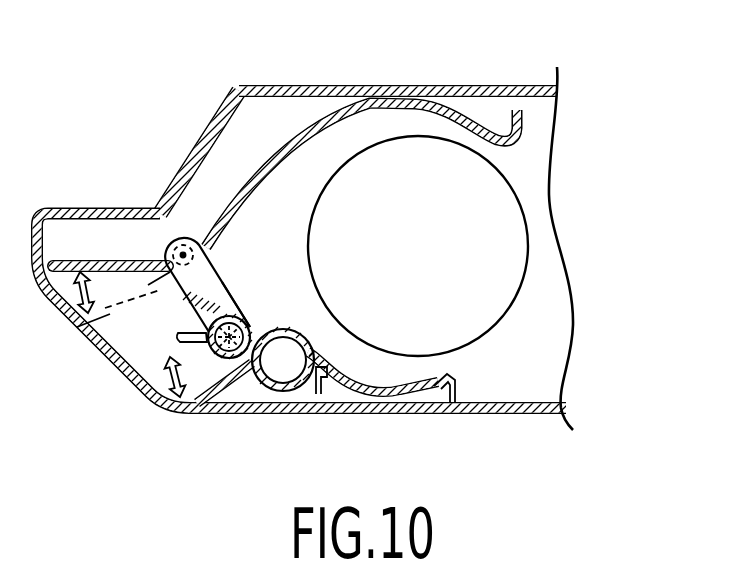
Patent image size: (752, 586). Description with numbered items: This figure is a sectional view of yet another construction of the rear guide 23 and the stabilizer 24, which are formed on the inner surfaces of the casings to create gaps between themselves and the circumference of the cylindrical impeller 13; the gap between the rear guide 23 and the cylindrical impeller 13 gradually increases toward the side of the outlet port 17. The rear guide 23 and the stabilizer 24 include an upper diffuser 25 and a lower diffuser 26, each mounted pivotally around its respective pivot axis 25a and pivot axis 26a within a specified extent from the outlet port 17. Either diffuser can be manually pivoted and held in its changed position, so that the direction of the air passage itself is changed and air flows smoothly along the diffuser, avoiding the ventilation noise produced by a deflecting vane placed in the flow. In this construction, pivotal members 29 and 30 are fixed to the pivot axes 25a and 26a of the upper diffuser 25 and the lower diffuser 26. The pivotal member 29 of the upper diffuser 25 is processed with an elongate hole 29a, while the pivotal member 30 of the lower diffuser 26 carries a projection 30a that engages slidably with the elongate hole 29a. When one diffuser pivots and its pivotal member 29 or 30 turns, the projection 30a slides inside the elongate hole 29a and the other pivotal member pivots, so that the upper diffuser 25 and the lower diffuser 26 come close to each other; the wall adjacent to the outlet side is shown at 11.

The tank body wall 11 is at (563, 263).
The cylindrical impeller 13 is at (483, 302).
The outlet port 17 is at (127, 382).
The rear guide 23 is at (301, 130).
The stabilizer 24 is at (427, 415).
The upper diffuser 25 is at (107, 260).
The pivot axis 25a is at (183, 250).
The lower diffuser 26 is at (235, 406).
The pivot axis 26a is at (315, 413).
The pivotal member 29 is at (212, 262).
The elongate hole 29a is at (232, 300).
The pivotal member 30 is at (290, 355).
The projection 30a is at (250, 323).